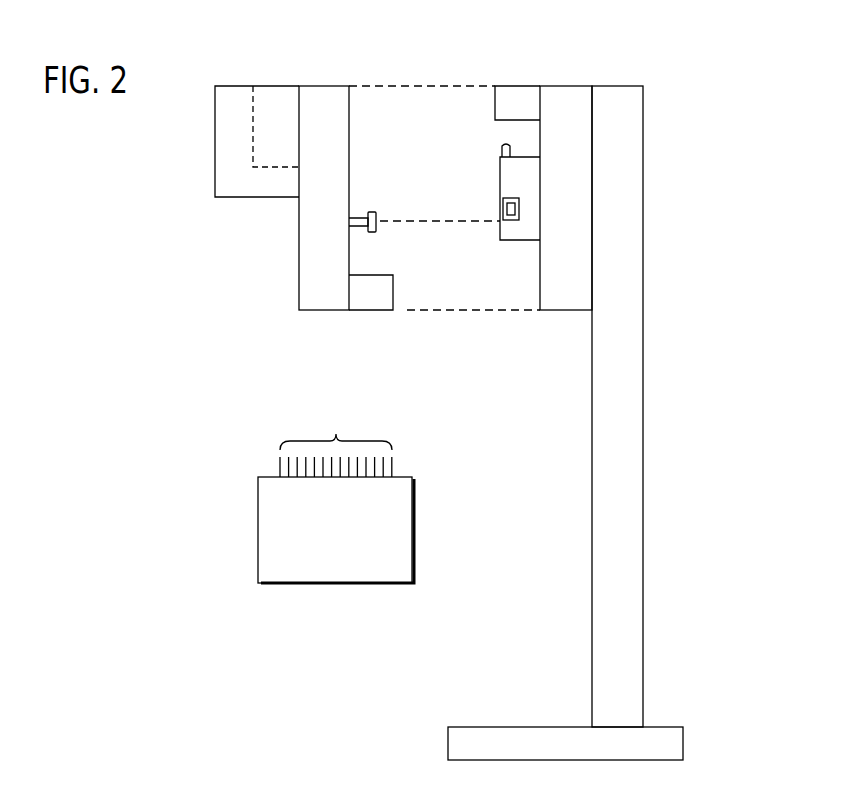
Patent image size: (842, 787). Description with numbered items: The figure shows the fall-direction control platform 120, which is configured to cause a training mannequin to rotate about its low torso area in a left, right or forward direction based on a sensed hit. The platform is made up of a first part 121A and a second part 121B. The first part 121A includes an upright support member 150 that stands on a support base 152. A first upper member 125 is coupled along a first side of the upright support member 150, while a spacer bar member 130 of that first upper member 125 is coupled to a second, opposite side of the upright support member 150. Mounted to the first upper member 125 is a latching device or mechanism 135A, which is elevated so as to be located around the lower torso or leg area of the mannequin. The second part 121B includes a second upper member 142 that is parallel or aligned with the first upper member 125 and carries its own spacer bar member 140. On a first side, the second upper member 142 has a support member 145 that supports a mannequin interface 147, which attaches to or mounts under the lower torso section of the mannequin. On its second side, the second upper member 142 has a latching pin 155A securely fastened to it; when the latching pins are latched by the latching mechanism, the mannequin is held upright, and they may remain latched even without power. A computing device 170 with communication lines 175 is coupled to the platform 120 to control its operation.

The fall-direction control platform 120 is at (413, 66).
The first part 121A is at (666, 149).
The second part 121B is at (252, 281).
The first upper member 125 is at (565, 106).
The spacer bar member 130 is at (515, 107).
The latching device or mechanism 135A is at (520, 241).
The spacer bar member 140 is at (370, 275).
The second upper member 142 is at (322, 106).
The support member 145 is at (277, 108).
The mannequin interface 147 is at (230, 150).
The upright support member 150 is at (618, 106).
The support base 152 is at (448, 746).
The latching pin 155A is at (360, 213).
The computing device 170 is at (335, 584).
The communication lines 175 is at (336, 433).